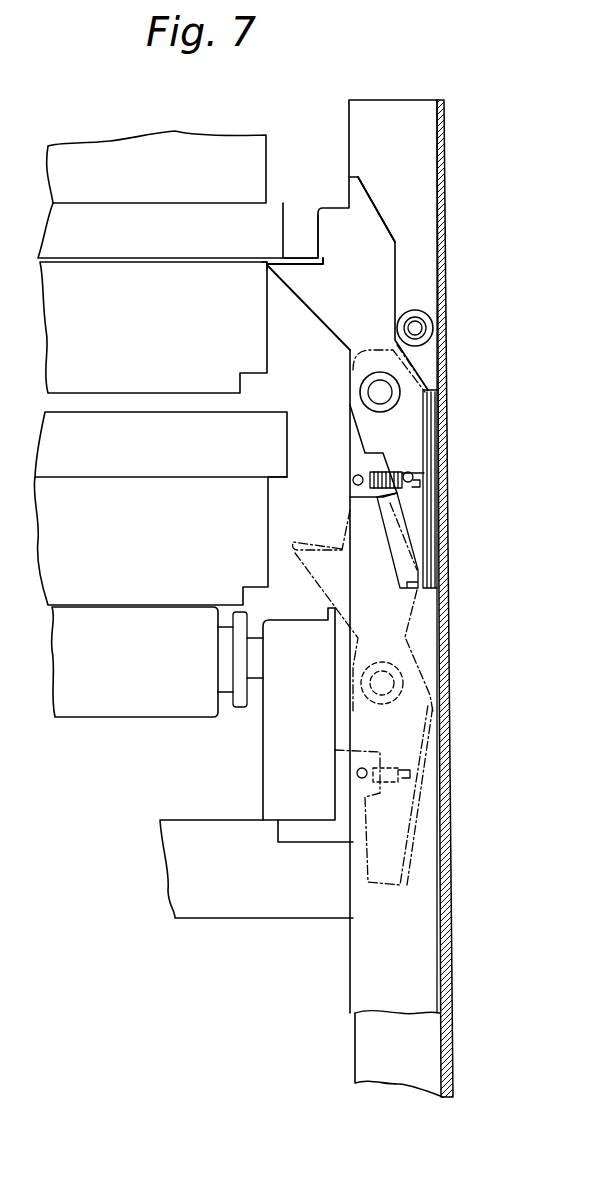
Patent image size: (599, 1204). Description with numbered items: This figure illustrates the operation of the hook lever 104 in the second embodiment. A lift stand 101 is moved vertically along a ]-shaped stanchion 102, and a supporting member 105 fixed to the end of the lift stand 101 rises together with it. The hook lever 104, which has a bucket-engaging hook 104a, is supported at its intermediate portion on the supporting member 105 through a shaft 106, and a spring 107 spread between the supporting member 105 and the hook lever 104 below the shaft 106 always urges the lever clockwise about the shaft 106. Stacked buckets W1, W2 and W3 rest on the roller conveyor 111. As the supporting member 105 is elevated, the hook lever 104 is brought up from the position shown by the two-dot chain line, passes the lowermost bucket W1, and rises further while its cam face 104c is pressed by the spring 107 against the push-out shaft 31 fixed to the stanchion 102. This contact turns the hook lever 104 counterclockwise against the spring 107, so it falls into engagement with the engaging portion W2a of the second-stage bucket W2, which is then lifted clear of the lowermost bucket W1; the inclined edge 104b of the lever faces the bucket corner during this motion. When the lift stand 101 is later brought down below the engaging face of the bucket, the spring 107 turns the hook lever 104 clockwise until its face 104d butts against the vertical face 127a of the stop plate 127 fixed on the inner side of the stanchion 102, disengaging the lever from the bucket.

The lowermost bucket W1 is at (162, 556).
The bucket of the second stage W2 is at (141, 337).
The engaging portion of bucket W2a is at (263, 268).
The bucket W3 is at (192, 186).
The roller conveyor 111 is at (142, 677).
The lift stand 101 is at (232, 907).
The stanchion 102 is at (449, 843).
The hook lever 104 is at (382, 276).
The bucket-engaging hook 104a is at (302, 252).
The inclined edge of guide plate 104b is at (309, 314).
The cam face 104c is at (385, 212).
The face of hook lever 104d is at (356, 429).
The supporting member 105 is at (443, 943).
The shaft 106 is at (385, 396).
The spring 107 is at (397, 488).
The stop plate 127 is at (338, 777).
The vertical face of stop plate 127a is at (338, 725).
The hook lever push-out shaft 31 is at (433, 320).